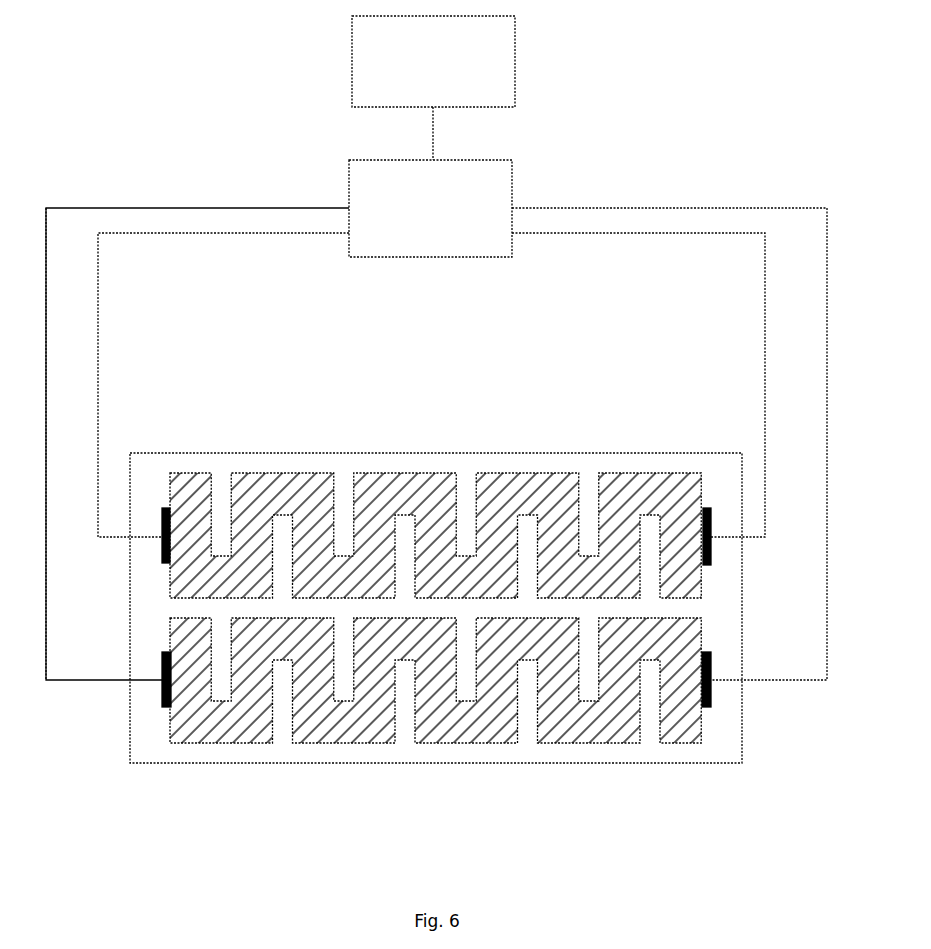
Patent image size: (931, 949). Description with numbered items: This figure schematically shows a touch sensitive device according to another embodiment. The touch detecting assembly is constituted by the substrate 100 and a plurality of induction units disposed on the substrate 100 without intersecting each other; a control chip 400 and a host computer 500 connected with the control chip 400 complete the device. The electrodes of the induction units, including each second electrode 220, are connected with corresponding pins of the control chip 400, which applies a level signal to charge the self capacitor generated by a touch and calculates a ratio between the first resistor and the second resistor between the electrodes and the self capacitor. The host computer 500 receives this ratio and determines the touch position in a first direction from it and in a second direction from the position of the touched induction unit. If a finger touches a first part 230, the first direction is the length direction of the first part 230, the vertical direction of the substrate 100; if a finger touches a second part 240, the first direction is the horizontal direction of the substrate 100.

The substrate 100 is at (335, 453).
The second electrode 220 is at (160, 517).
The first part 230 is at (181, 478).
The second part 240 is at (283, 625).
The control chip 400 is at (430, 208).
The host computer 500 is at (433, 61).